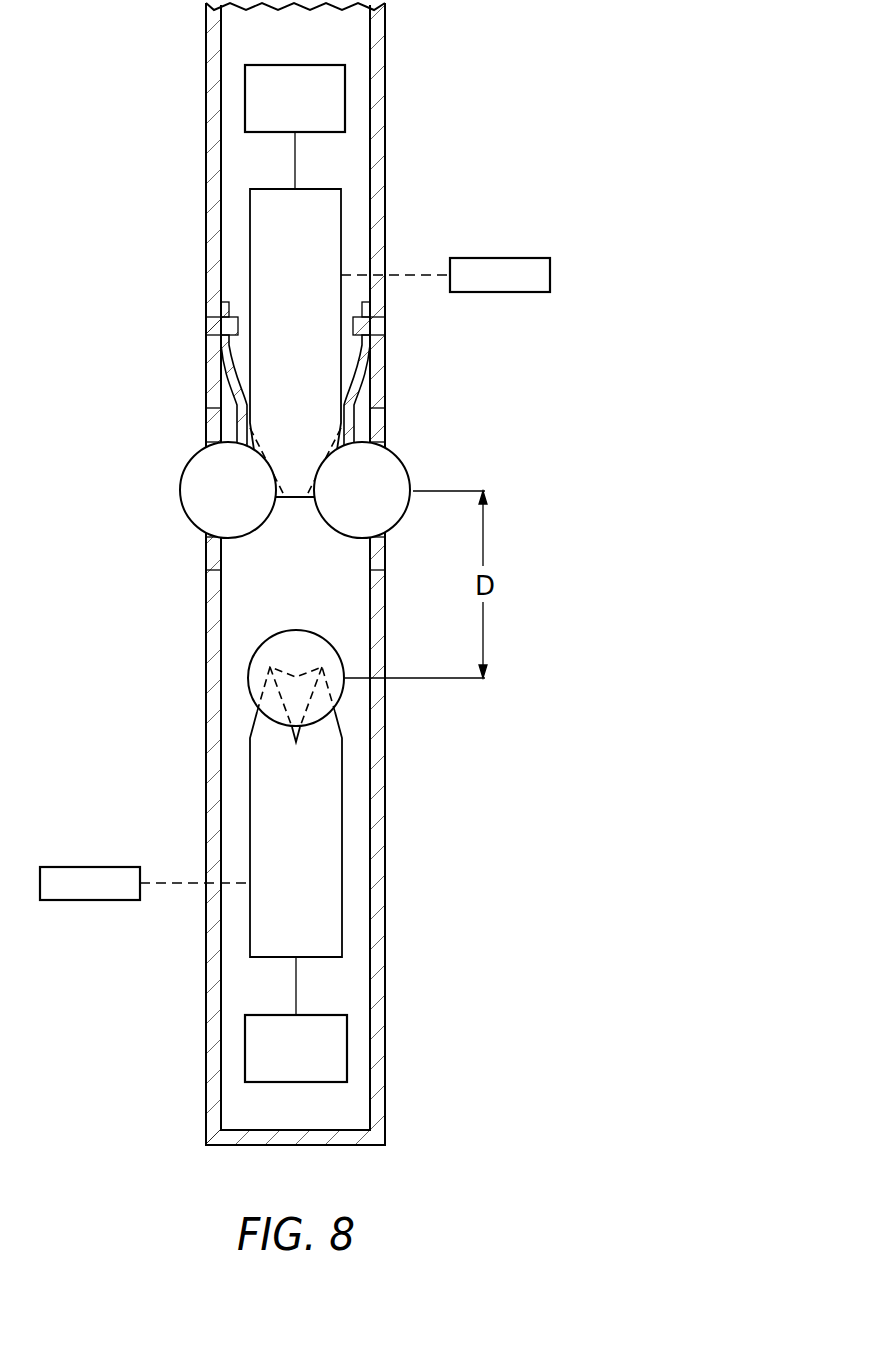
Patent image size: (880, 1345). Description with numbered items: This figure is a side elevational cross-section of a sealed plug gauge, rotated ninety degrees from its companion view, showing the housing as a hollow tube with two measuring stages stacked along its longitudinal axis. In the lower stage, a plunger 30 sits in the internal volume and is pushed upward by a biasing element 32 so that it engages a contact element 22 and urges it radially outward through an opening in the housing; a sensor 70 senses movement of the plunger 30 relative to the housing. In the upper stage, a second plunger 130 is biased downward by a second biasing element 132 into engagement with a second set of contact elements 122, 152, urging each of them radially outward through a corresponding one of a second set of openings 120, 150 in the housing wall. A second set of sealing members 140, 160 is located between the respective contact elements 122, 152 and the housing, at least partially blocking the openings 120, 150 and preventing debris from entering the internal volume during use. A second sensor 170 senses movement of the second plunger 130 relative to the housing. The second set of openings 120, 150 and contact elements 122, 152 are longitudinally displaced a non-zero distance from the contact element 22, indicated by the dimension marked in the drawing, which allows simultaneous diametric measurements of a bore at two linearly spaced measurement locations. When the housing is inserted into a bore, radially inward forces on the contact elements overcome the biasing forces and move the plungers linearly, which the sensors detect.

The contact element 22 is at (295, 631).
The plunger 30 is at (330, 881).
The biasing element 32 is at (245, 1052).
The sensor 70 is at (90, 867).
The opening 120 is at (385, 568).
The contact element 122 is at (403, 467).
The second plunger 130 is at (256, 248).
The second biasing element 132 is at (245, 103).
The sealing member 140 is at (386, 421).
The opening 150 is at (207, 568).
The contact element 152 is at (187, 467).
The sealing member 160 is at (207, 421).
The second sensor 170 is at (497, 258).